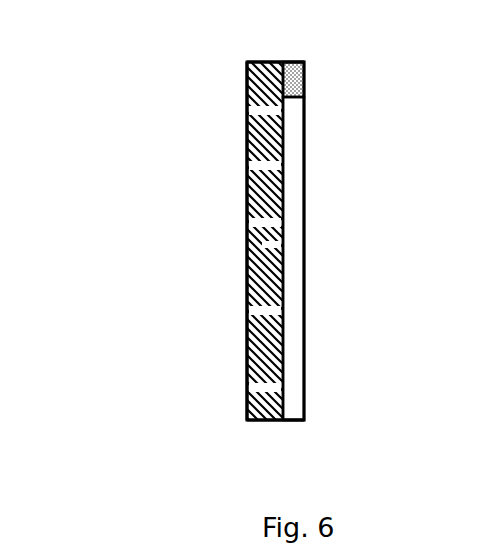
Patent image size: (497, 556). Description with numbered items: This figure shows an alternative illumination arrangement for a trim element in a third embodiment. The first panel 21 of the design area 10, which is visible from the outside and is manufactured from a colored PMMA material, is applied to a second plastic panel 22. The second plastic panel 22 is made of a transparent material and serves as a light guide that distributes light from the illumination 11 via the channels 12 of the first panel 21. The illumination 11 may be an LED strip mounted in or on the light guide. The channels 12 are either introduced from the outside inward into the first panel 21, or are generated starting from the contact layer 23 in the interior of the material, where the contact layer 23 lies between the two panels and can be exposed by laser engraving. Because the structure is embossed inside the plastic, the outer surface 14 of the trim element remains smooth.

The design area 10 is at (197, 176).
The illumination 11 is at (304, 78).
The channels 12 is at (250, 309).
The outer surface 14 is at (250, 242).
The first panel 21 is at (248, 80).
The second plastic panel 22 is at (300, 169).
The contact layer 23 is at (281, 420).